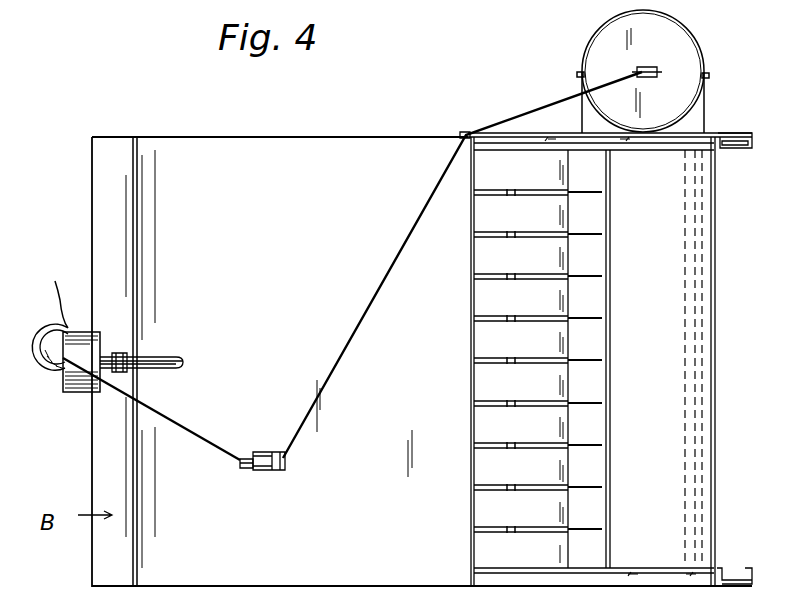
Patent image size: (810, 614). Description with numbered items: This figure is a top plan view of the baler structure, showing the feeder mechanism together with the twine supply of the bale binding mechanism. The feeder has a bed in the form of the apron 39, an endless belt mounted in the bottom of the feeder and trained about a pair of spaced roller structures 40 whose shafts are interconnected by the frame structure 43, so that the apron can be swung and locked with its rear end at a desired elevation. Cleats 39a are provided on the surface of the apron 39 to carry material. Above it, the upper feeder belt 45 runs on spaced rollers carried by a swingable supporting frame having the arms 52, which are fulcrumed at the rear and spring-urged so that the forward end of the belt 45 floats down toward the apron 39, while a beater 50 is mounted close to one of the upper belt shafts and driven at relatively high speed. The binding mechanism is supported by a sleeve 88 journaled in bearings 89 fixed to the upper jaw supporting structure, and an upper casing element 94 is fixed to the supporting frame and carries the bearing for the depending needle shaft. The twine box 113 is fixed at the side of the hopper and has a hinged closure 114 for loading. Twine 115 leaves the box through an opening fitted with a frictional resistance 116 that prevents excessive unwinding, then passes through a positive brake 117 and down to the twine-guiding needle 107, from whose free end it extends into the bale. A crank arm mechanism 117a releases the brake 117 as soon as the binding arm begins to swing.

The apron 39 is at (668, 497).
The cleats 39a is at (612, 470).
The roller structures 40 is at (684, 284).
The frame structure 43 is at (672, 144).
The upper feeder belt 45 is at (483, 298).
The beater 50 is at (585, 358).
The arms 52 is at (548, 145).
The sleeve 88 is at (160, 358).
The bearings 89 is at (120, 372).
The upper casing element 94 is at (82, 394).
The twine-guiding needle 107 is at (38, 338).
The twine box 113 is at (688, 42).
The hinged closure 114 is at (598, 23).
The twine 115 is at (352, 350).
The frictional resistance 116 is at (646, 66).
The positive brake 117 is at (253, 455).
The crank arm mechanism 117a is at (244, 470).